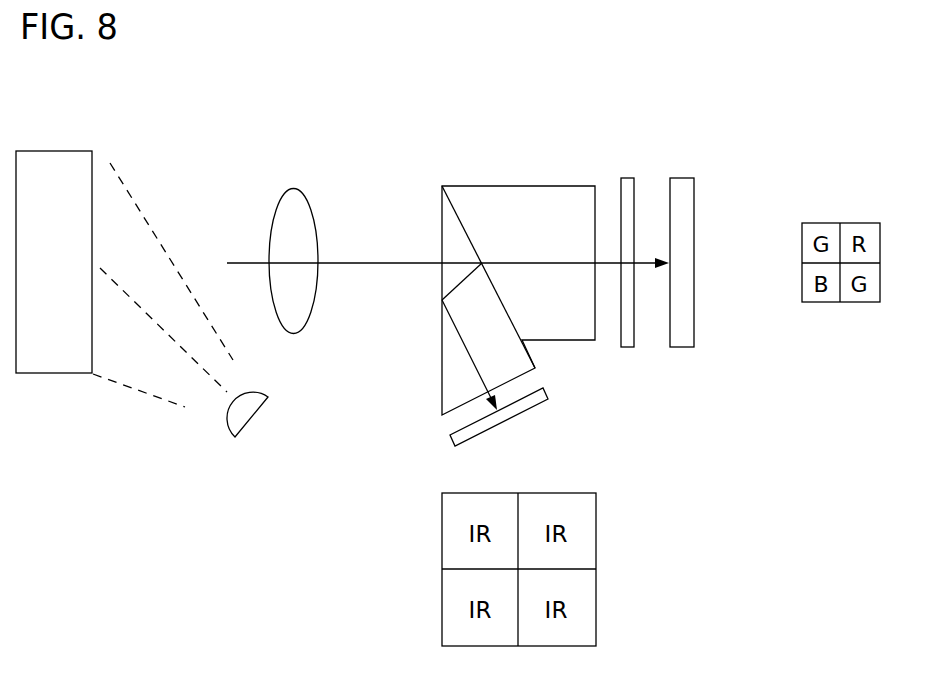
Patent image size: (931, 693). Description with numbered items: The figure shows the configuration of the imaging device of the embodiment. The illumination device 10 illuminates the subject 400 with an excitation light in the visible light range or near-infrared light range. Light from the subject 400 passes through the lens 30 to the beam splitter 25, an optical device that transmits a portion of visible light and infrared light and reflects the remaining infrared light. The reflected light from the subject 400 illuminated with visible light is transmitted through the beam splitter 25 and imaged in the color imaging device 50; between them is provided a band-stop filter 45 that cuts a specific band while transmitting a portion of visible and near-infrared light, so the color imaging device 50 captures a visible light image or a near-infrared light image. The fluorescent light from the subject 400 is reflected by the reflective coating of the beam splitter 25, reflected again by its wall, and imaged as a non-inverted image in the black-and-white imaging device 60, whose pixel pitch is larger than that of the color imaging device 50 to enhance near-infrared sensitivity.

The subject 400 is at (55, 150).
The illumination device 10 is at (248, 423).
The lens 30 is at (292, 187).
The beam splitter 25 is at (518, 185).
The band-stop filter 45 is at (630, 177).
The color imaging device 50 is at (682, 177).
The black-and-white imaging device 60 is at (530, 408).